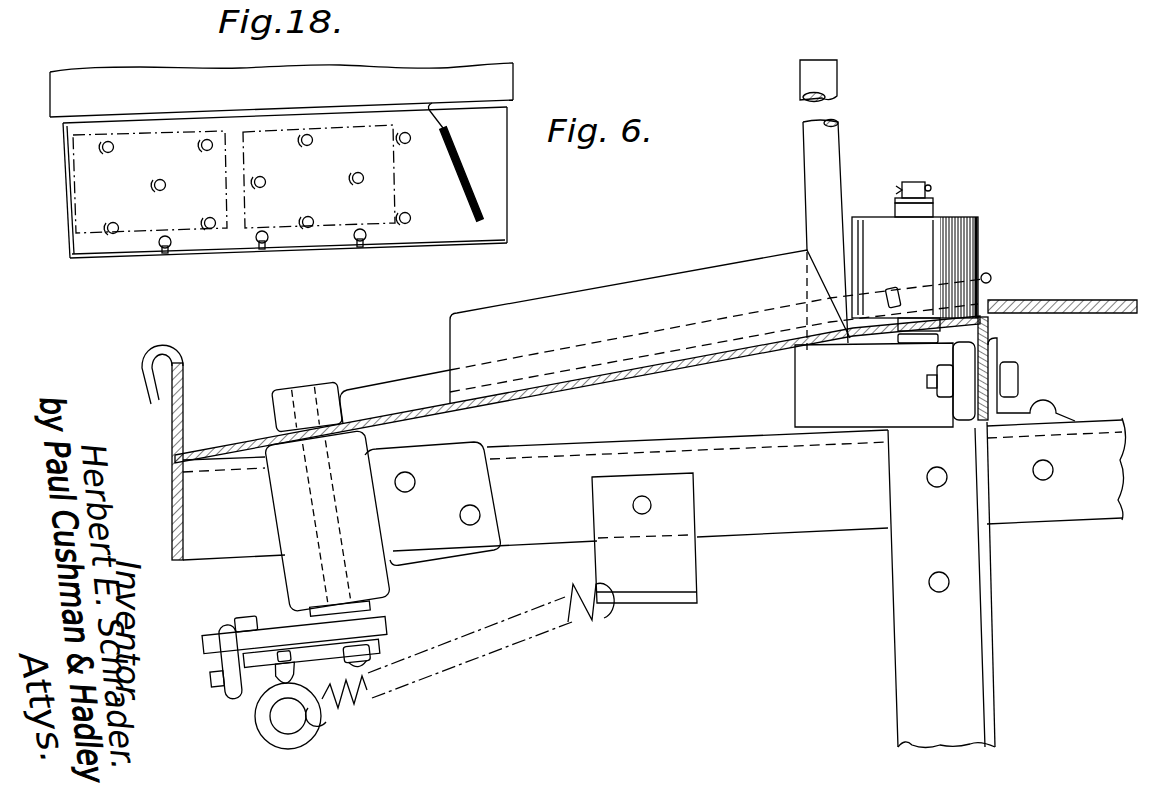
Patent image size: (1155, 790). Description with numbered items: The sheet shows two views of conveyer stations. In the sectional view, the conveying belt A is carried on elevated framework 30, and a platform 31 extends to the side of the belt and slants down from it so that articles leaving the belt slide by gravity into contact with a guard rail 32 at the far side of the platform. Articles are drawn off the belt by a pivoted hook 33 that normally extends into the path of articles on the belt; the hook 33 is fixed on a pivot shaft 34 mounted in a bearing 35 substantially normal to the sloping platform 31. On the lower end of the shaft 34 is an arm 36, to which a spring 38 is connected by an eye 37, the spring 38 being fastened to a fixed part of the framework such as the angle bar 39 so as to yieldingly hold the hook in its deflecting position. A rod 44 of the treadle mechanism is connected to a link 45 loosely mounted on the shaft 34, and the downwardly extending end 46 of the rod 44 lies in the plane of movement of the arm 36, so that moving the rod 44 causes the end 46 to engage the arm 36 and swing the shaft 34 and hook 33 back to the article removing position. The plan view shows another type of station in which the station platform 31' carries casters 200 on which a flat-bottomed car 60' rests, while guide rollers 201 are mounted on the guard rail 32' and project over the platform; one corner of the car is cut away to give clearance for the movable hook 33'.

In FIG. 18, the car 60' is at (234, 179).
In FIG. 18, the casters 200 is at (432, 146).
In FIG. 18, the guide rollers 201 is at (270, 240).
In FIG. 18, the station platform 31' is at (285, 182).
In FIG. 18, the guard rail 32' is at (288, 266).
In FIG. 18, the movable hook 33' is at (494, 162).
In FIG. 6, the framework 30 is at (654, 583).
In FIG. 6, the platform 31 is at (579, 356).
In FIG. 6, the guard rail 32 is at (179, 452).
In FIG. 6, the hook 33 is at (395, 386).
In FIG. 6, the pivot shaft 34 is at (300, 384).
In FIG. 6, the bearing 35 is at (370, 565).
In FIG. 6, the arm 36 is at (260, 668).
In FIG. 6, the eye 37 is at (315, 740).
In FIG. 6, the spring 38 is at (420, 670).
In FIG. 6, the angle bar 39 is at (682, 563).
In FIG. 6, the rod 44 is at (240, 617).
In FIG. 6, the link 45 is at (270, 633).
In FIG. 6, the downwardly extending end 46 is at (228, 682).
In FIG. 6, the conveying belt A is at (1072, 303).